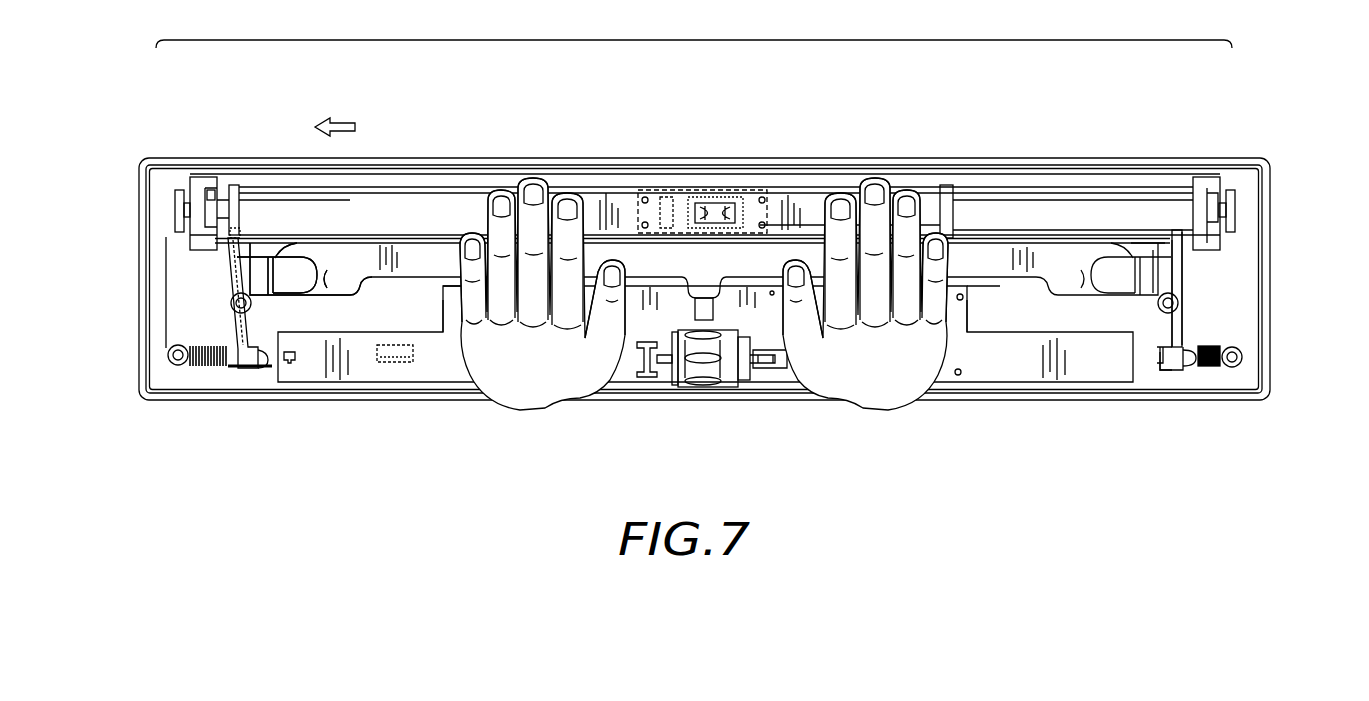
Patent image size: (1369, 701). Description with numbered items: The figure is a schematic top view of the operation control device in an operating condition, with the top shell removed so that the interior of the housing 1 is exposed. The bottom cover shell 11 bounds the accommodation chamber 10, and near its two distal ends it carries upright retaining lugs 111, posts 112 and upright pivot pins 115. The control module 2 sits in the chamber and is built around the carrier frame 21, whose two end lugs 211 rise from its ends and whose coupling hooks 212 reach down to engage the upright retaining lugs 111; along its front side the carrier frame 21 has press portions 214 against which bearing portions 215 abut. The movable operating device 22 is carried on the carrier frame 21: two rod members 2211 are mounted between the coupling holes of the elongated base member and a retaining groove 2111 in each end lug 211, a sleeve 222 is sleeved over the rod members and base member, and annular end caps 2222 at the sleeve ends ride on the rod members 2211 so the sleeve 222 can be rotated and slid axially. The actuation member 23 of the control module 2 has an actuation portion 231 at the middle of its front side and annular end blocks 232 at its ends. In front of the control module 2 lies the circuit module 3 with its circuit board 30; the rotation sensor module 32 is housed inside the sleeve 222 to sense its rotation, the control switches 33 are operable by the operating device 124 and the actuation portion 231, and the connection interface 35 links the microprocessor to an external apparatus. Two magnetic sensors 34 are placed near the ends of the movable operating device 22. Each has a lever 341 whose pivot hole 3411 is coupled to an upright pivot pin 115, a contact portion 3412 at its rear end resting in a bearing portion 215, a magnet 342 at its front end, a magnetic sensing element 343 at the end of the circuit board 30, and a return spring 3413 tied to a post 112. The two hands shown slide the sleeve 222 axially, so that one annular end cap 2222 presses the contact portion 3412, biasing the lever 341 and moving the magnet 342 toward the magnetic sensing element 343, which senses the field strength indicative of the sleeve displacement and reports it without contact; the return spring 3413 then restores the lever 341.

The housing 1 is at (150, 410).
The bottom cover shell 11 is at (193, 395).
The upright retaining lugs 111 is at (1232, 212).
The posts 112 is at (176, 357).
The upright pivot pins 115 is at (233, 304).
The operating device 124 is at (708, 372).
The control module 2 is at (697, 40).
The carrier frame 21 is at (494, 230).
The end lugs 211 is at (181, 179).
The retaining groove 2111 is at (211, 190).
The coupling hooks 212 is at (1222, 252).
The press portions 214 is at (281, 275).
The bearing portions 215 is at (1135, 245).
The movable operating device 22 is at (596, 186).
The sleeve 222 is at (806, 215).
The annular end caps 2222 is at (946, 226).
The rod members 2211 is at (1033, 225).
The actuation member 23 is at (412, 260).
The actuation portion 231 is at (695, 290).
The annular end blocks 232 is at (1077, 237).
The circuit module 3 is at (348, 386).
The circuit board 30 is at (455, 360).
The rotation sensor module 32 is at (683, 190).
The control switches 33 is at (773, 364).
The magnetic sensors 34 is at (224, 273).
The lever 341 is at (1178, 297).
The pivot hole 3411 is at (1178, 308).
The contact portion 3412 is at (1176, 260).
The return spring 3413 is at (1203, 366).
The magnet 342 is at (1153, 364).
The magnetic sensing element 343 is at (292, 364).
The connection interface 35 is at (399, 360).
The accommodation chamber 10 is at (1030, 308).